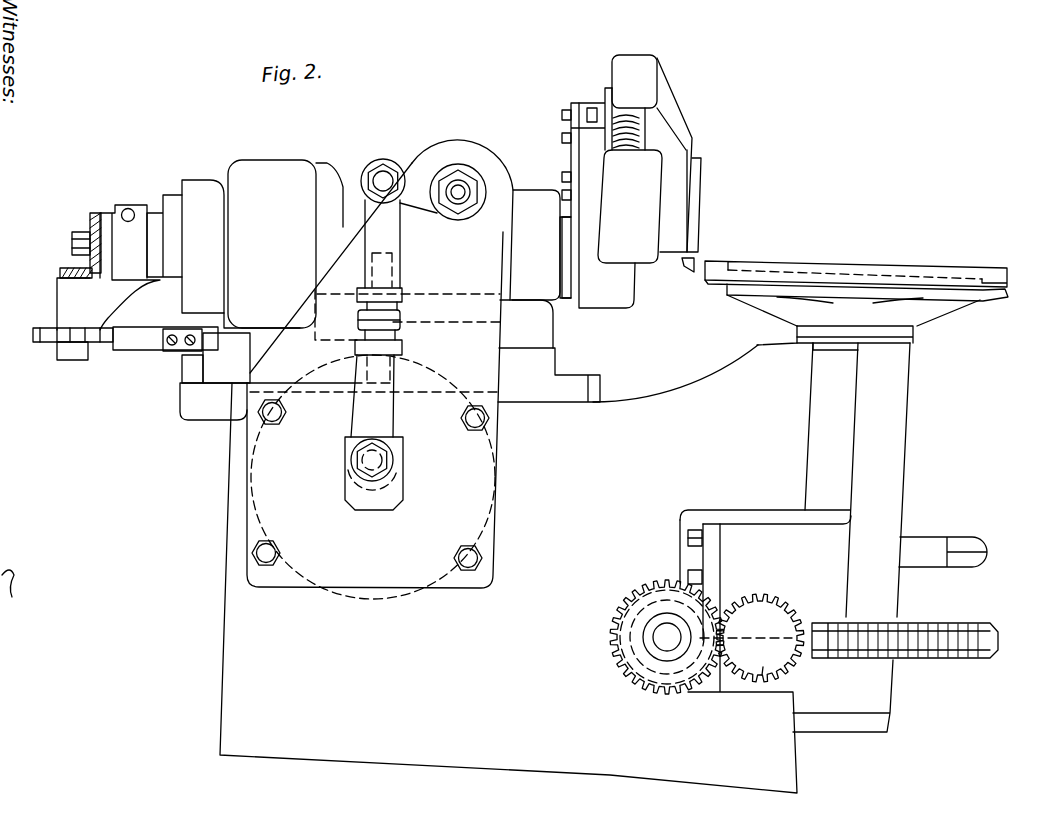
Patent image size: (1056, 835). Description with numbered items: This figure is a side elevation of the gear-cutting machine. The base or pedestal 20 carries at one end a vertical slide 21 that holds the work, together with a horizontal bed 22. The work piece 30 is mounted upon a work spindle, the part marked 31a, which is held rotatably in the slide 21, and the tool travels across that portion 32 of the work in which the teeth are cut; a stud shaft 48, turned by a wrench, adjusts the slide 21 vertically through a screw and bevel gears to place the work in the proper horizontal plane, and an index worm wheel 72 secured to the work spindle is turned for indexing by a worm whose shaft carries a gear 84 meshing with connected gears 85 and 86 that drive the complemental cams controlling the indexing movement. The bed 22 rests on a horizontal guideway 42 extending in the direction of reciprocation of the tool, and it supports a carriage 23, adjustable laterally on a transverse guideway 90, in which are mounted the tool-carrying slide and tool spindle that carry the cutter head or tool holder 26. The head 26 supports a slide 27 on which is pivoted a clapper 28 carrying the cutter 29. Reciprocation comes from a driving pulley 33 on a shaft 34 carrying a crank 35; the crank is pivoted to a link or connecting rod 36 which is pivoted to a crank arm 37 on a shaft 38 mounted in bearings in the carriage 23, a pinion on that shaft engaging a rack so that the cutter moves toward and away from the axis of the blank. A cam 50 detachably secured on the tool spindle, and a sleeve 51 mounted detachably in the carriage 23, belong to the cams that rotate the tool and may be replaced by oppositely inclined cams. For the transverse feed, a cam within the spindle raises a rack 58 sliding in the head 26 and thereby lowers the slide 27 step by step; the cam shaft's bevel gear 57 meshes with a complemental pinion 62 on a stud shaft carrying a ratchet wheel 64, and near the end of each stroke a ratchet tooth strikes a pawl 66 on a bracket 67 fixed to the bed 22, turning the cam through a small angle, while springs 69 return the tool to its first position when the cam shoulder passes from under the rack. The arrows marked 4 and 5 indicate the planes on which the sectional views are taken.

The section line 4- 4 is at (592, 775).
The section line 5- 5 is at (997, 497).
The base or pedestal 20 is at (240, 620).
The vertical slide 21 is at (893, 372).
The horizontal bed 22 is at (561, 360).
The carriage 23 is at (268, 180).
The cutter head 26 is at (630, 175).
The slide 27 is at (676, 112).
The clapper 28 is at (700, 196).
The cutter 29 is at (684, 270).
The work piece 30 is at (982, 293).
The table support 31a is at (958, 322).
The portion of the work 32 is at (715, 262).
The driving pulley 33 is at (495, 535).
The shaft 34 is at (395, 493).
The crank 35 is at (392, 462).
The link or connecting rod 36 is at (400, 354).
The crank arm 37 is at (385, 160).
The shaft 38 is at (462, 175).
The horizontal guideway 42 is at (180, 383).
The stud shaft 48 is at (933, 548).
The cam 50 is at (169, 194).
The sleeve 51 is at (204, 186).
The bevel gear 57 is at (93, 215).
The rack 58 is at (589, 102).
The complemental pinion 62 is at (60, 272).
The ratchet wheel 64 is at (40, 337).
The pawl 66 is at (140, 350).
The bracket 67 is at (173, 352).
The springs 69 is at (630, 148).
The index worm wheel 72 is at (994, 644).
The gear 84 is at (608, 635).
The gear 85 is at (763, 667).
The gear 86 is at (775, 605).
The transverse guideway 90 is at (496, 328).